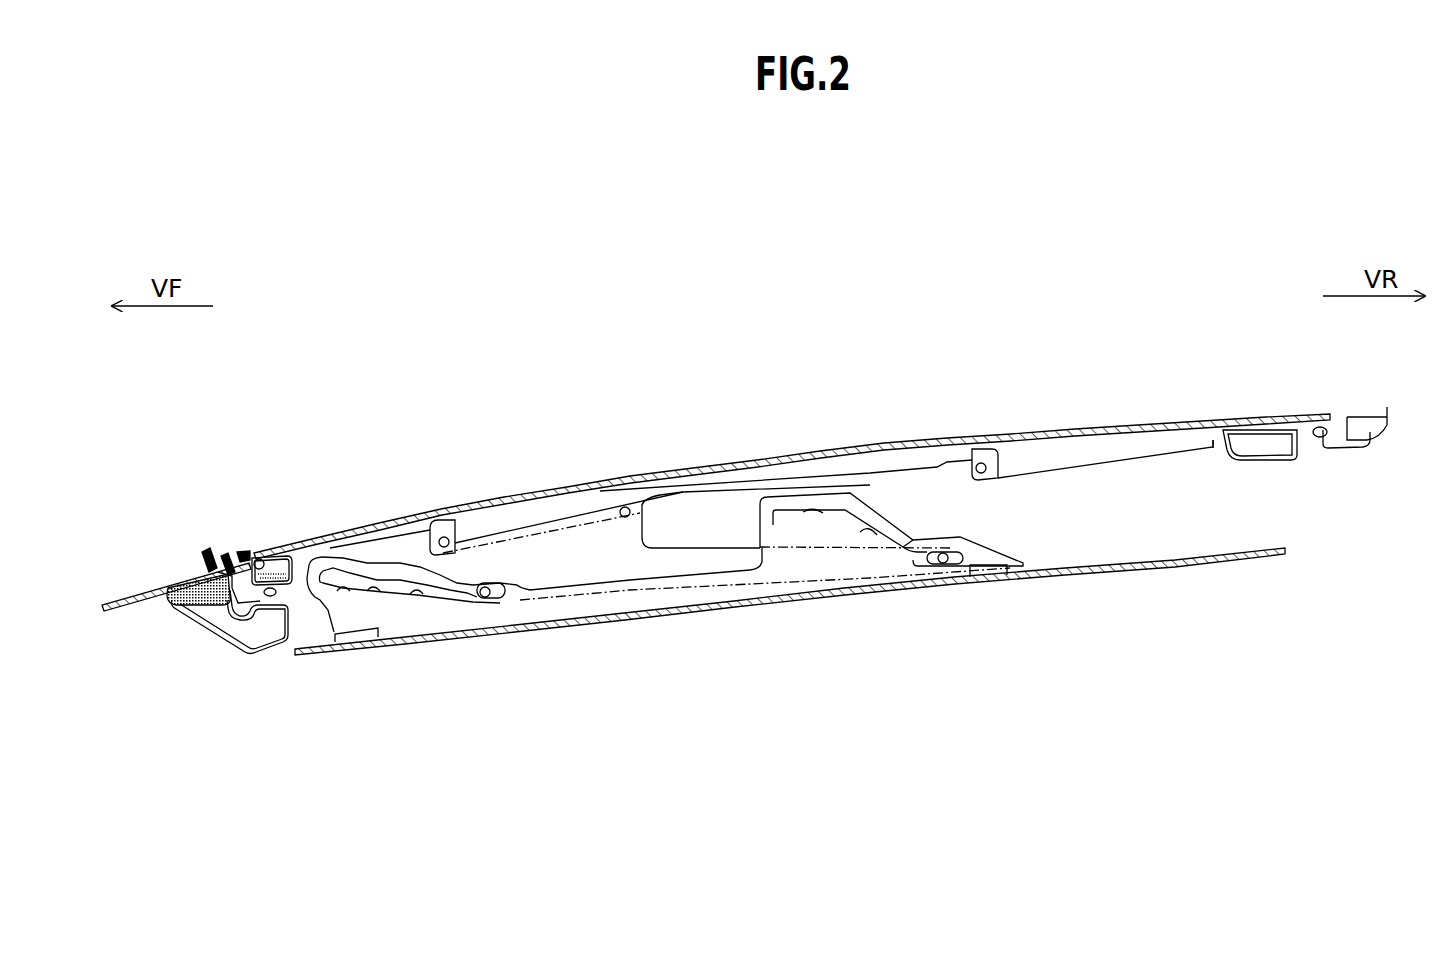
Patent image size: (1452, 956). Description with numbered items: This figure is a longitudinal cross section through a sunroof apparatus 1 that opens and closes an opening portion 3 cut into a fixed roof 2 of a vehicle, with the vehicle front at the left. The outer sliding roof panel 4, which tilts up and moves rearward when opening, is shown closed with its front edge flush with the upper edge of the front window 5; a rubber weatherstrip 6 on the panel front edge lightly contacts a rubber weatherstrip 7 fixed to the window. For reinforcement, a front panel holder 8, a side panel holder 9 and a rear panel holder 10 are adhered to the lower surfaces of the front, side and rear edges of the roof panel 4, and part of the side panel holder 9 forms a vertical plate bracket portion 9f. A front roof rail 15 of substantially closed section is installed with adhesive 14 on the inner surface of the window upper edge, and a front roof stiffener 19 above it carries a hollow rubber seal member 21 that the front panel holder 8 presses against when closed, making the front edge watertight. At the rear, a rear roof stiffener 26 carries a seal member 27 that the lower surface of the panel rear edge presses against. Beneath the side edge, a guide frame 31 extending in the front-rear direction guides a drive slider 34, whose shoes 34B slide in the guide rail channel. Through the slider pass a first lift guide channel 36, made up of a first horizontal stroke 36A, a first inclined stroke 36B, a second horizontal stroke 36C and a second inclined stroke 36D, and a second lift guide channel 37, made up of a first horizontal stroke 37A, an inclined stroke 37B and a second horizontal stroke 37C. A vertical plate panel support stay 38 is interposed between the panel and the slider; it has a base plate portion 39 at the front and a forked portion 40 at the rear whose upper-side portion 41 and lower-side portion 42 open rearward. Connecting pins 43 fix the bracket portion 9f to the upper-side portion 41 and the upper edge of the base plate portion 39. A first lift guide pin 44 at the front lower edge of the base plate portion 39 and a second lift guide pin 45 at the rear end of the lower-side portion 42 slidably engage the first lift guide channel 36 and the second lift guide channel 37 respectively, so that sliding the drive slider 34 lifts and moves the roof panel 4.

The sunroof apparatus 1 is at (468, 420).
The fixed roof 2 is at (1373, 413).
The opening portion 3 is at (1345, 413).
The roof panel 4 is at (1043, 433).
The front window 5 is at (157, 592).
The weatherstrip 6 is at (240, 550).
The weatherstrip 7 is at (203, 550).
The front panel holder 8 is at (295, 552).
The side panel holder 9 is at (1113, 446).
The bracket portion 9f is at (1170, 440).
The rear panel holder 10 is at (1263, 463).
The adhesive 14 is at (172, 588).
The front roof rail 15 is at (190, 627).
The front roof stiffener 19 is at (243, 603).
The seal member 21 is at (290, 590).
The rear roof stiffener 26 is at (1363, 447).
The seal member 27 is at (1308, 437).
The guide frame 31 is at (1188, 566).
The drive slider 34 is at (636, 597).
The shoes 34B is at (343, 640).
The first lift guide channel 36 is at (470, 680).
The first horizontal stroke 36A is at (433, 557).
The first inclined stroke 36B is at (423, 597).
The second horizontal stroke 36C is at (387, 597).
The second inclined stroke 36D is at (353, 600).
The second lift guide channel 37 is at (820, 627).
The first horizontal stroke 37A is at (920, 565).
The inclined stroke 37B is at (868, 532).
The second horizontal stroke 37C is at (805, 515).
The panel support stay 38 is at (493, 526).
The base plate portion 39 is at (551, 520).
The forked portion 40 is at (697, 516).
The upper-side portion 41 is at (862, 467).
The lower-side portion 42 is at (777, 563).
The connecting pins 43 is at (444, 536).
The first lift guide pin 44 is at (487, 600).
The second lift guide pin 45 is at (947, 562).